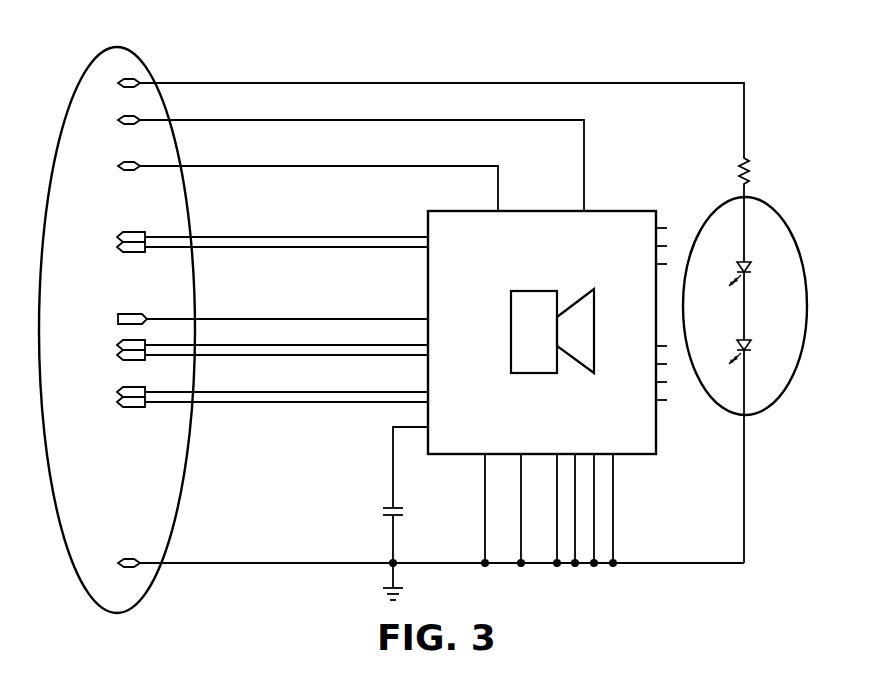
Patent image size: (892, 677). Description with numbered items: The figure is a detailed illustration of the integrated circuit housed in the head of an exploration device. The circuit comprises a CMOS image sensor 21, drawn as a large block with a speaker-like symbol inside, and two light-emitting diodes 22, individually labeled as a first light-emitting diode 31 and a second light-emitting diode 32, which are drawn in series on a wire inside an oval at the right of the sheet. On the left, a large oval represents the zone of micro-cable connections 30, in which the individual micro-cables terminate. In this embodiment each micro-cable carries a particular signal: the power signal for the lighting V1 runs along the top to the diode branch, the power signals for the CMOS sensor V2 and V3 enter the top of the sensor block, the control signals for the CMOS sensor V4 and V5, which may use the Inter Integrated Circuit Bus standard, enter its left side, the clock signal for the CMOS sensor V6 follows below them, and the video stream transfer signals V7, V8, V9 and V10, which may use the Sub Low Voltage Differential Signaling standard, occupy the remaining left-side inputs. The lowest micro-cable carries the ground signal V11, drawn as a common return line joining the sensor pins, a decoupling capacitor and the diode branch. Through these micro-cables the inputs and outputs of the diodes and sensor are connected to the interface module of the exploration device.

The CMOS image sensor 21 is at (664, 462).
The light-emitting diodes 22 is at (762, 359).
The zone of micro-cable connections 30 is at (70, 492).
The light-emitting diode 31 is at (751, 263).
The light-emitting diode 32 is at (751, 346).
The power signal for the lighting V1 is at (165, 83).
The power signal for the CMOS sensor V2 is at (180, 120).
The power signal for the CMOS sensor V3 is at (192, 166).
The control signal for the CMOS sensor V4 is at (202, 237).
The control signal for the CMOS sensor V5 is at (248, 250).
The clock signal for the CMOS sensor V6 is at (197, 319).
The video stream transfer signal V7 is at (203, 345).
The video stream transfer signal V8 is at (298, 358).
The video stream transfer signal V9 is at (208, 392).
The video stream transfer signal V10 is at (256, 405).
The ground signal V11 is at (180, 563).